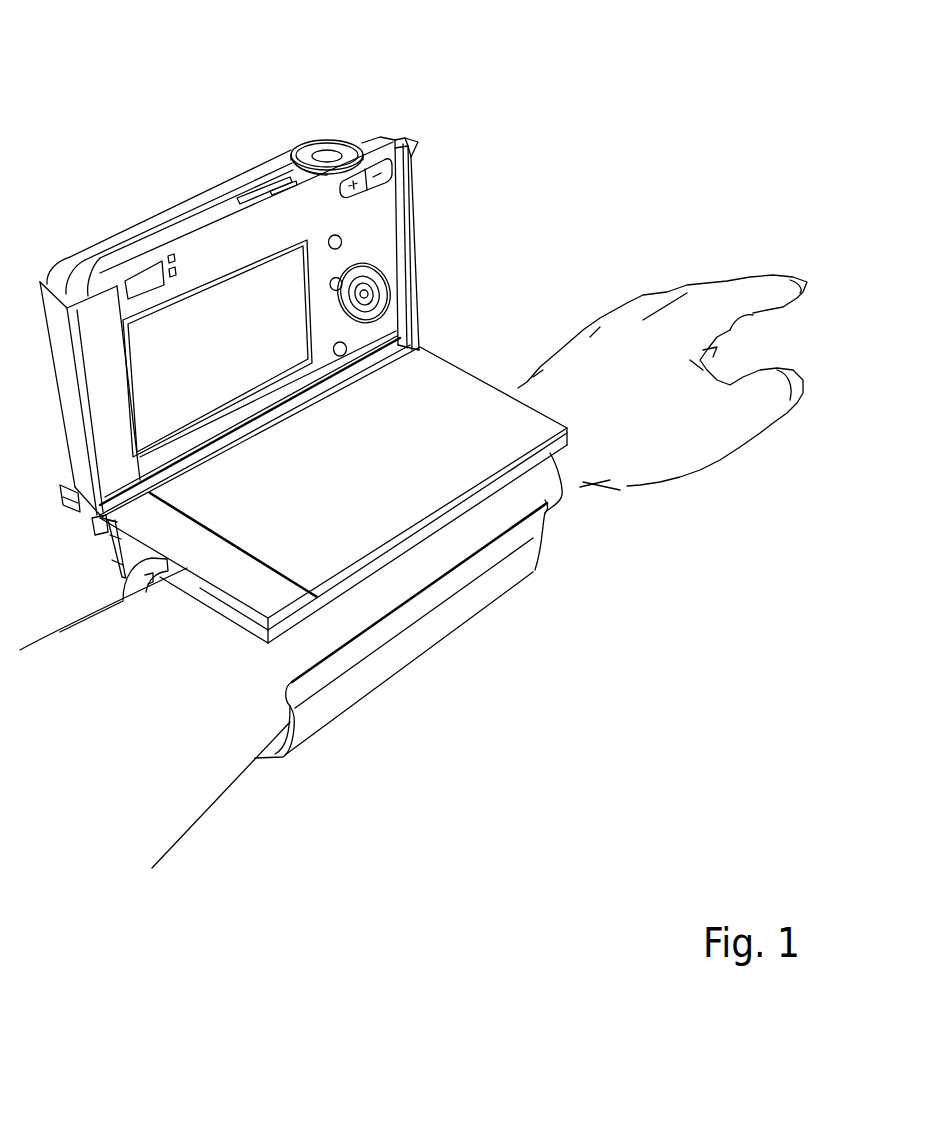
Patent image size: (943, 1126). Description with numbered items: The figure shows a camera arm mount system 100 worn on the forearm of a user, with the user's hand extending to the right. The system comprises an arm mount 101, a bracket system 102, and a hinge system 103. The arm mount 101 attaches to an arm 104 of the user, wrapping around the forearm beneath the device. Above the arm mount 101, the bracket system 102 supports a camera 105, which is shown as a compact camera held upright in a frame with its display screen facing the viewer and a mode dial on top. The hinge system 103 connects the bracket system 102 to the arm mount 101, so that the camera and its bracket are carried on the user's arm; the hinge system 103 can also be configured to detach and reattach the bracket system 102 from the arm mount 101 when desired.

The camera arm mount system 100 is at (176, 95).
The arm mount 101 is at (478, 447).
The bracket system 102 is at (420, 252).
The hinge system 103 is at (412, 348).
The arm 104 is at (177, 777).
The camera 105 is at (381, 141).